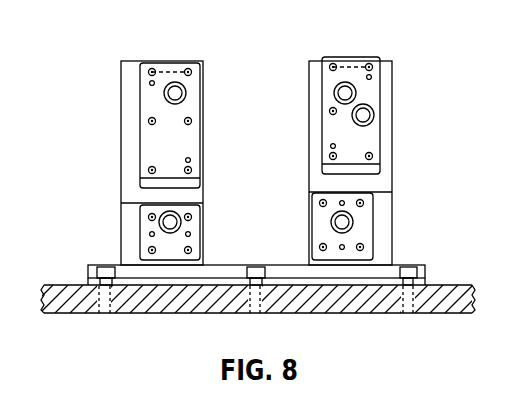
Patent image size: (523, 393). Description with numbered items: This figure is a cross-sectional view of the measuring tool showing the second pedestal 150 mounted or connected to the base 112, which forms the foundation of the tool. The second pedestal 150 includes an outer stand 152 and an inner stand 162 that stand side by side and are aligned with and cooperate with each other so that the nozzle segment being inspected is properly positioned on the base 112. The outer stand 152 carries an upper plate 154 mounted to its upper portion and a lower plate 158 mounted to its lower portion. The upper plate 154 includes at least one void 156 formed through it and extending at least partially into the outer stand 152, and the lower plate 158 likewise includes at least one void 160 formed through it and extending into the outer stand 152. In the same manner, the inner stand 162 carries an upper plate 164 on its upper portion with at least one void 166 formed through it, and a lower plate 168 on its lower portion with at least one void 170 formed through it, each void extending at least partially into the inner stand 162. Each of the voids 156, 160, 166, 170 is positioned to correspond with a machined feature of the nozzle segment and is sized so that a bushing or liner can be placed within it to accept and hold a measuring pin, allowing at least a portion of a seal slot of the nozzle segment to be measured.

The base 112 is at (82, 290).
The second pedestal 150 is at (427, 276).
The outer stand 152 is at (126, 73).
The upper plate 154 is at (195, 142).
The void 156 is at (187, 92).
The lower plate 158 is at (192, 223).
The void 160 is at (157, 220).
The inner stand 162 is at (387, 72).
The upper plate 164 is at (372, 145).
The void 166 is at (345, 82).
The lower plate 168 is at (362, 226).
The void 170 is at (315, 226).